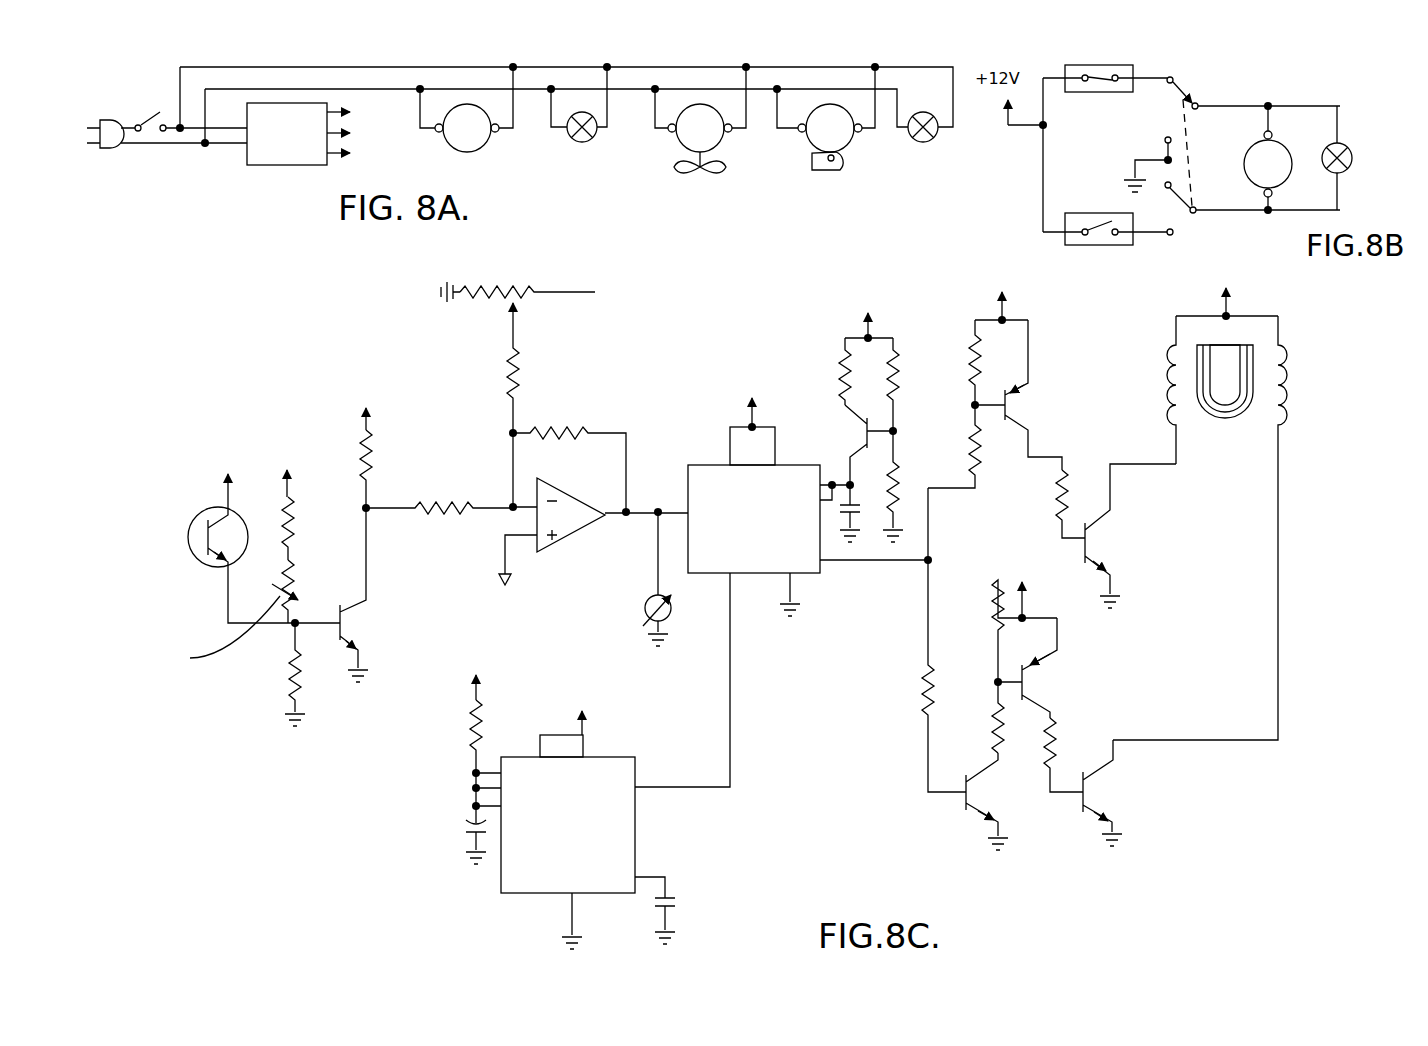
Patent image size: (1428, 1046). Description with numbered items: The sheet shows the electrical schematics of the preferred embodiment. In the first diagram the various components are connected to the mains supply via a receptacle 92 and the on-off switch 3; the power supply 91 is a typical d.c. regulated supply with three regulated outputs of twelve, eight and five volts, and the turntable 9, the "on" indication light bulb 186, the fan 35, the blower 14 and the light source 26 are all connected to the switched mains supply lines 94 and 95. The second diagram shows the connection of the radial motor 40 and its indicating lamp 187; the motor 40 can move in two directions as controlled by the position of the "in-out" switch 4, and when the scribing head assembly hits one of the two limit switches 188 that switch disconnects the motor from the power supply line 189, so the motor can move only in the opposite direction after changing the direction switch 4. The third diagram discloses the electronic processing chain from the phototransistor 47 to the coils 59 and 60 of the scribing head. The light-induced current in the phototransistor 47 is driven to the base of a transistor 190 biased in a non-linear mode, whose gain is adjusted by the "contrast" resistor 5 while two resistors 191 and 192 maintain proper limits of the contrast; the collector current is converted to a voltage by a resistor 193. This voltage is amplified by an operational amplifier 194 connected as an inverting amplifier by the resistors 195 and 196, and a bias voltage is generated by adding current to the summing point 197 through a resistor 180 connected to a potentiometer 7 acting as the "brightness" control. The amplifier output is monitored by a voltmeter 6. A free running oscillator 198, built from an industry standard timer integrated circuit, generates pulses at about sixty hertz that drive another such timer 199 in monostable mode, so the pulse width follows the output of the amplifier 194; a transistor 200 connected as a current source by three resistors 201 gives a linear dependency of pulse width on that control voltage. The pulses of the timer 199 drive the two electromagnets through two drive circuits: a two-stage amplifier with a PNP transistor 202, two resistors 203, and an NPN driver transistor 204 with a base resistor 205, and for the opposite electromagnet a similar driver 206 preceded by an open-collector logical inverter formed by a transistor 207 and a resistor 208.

In FIG. 8A, the on-off switch 3 is at (158, 98).
In FIG. 8A, the receptacle 92 is at (106, 148).
In FIG. 8A, the switched mains supply line 94 is at (212, 66).
In FIG. 8A, the switched mains supply line 95 is at (282, 88).
In FIG. 8A, the power supply 91 is at (295, 165).
In FIG. 8A, the turntable 9 is at (492, 141).
In FIG. 8A, the on indication light bulb 186 is at (596, 134).
In FIG. 8A, the fan 35 is at (721, 146).
In FIG. 8A, the blower 14 is at (812, 142).
In FIG. 8A, the light source 26 is at (937, 135).
In FIG. 8B, the limit switch 188 is at (1140, 58).
In FIG. 8B, the in-out switch 4 is at (1197, 90).
In FIG. 8B, the power supply line 189 is at (1043, 160).
In FIG. 8B, the indicating lamp 187 is at (1346, 138).
In FIG. 8B, the radial motor 40 is at (1293, 187).
In FIG. 8C, the phototransistor 47 is at (195, 514).
In FIG. 8C, the resistor 191 is at (298, 506).
In FIG. 8C, the contrast resistor 5 is at (298, 576).
In FIG. 8C, the resistor 192 is at (303, 657).
In FIG. 8C, the resistor 193 is at (372, 467).
In FIG. 8C, the transistor 190 is at (355, 622).
In FIG. 8C, the potentiometer 7 is at (531, 289).
In FIG. 8C, the resistor 180 is at (505, 368).
In FIG. 8C, the summing point 197 is at (507, 431).
In FIG. 8C, the resistor 196 is at (553, 430).
In FIG. 8C, the resistor 195 is at (436, 499).
In FIG. 8C, the operational amplifier 194 is at (572, 532).
In FIG. 8C, the voltmeter 6 is at (673, 607).
In FIG. 8C, the timer 199 is at (768, 575).
In FIG. 8C, the resistors 201 is at (843, 364).
In FIG. 8C, the transistor 200 is at (860, 420).
In FIG. 8C, the resistors 203 is at (960, 456).
In FIG. 8C, the PNP transistor 202 is at (1024, 405).
In FIG. 8C, the base resistor 205 is at (1066, 473).
In FIG. 8C, the NPN driver transistor 204 is at (1102, 544).
In FIG. 8C, the coil 59 is at (1172, 400).
In FIG. 8C, the coil 60 is at (1281, 361).
In FIG. 8C, the resistor 208 is at (922, 677).
In FIG. 8C, the transistor 207 is at (971, 782).
In FIG. 8C, the driver 206 is at (1145, 718).
In FIG. 8C, the free running oscillator 198 is at (548, 855).